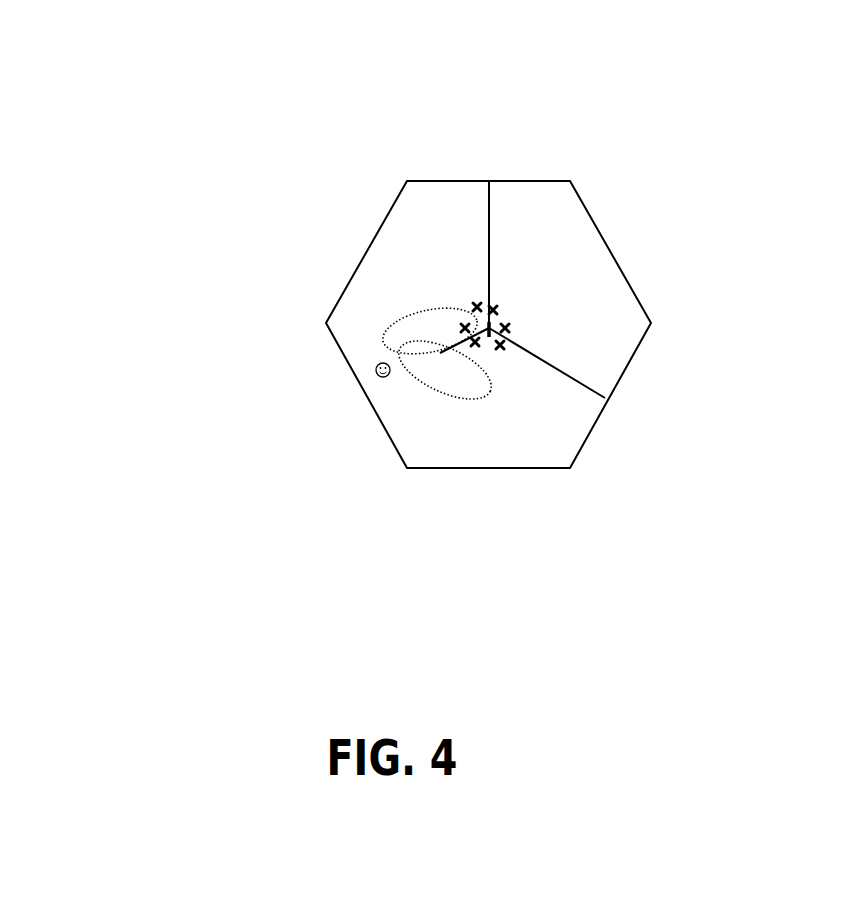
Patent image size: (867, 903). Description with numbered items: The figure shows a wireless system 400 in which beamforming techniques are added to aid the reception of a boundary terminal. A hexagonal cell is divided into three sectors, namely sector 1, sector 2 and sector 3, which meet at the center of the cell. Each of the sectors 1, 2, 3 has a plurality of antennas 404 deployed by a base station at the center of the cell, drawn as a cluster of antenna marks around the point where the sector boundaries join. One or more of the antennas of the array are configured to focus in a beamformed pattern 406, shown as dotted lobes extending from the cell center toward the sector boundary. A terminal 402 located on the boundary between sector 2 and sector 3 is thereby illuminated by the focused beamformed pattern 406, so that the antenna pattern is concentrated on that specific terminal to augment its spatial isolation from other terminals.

The system 400 is at (20, 35).
The terminal 402 is at (395, 378).
The antennas 404 is at (492, 329).
The beamformed pattern 406 is at (393, 322).
The sector 1 is at (534, 293).
The sector 2 is at (497, 387).
The sector 3 is at (440, 293).